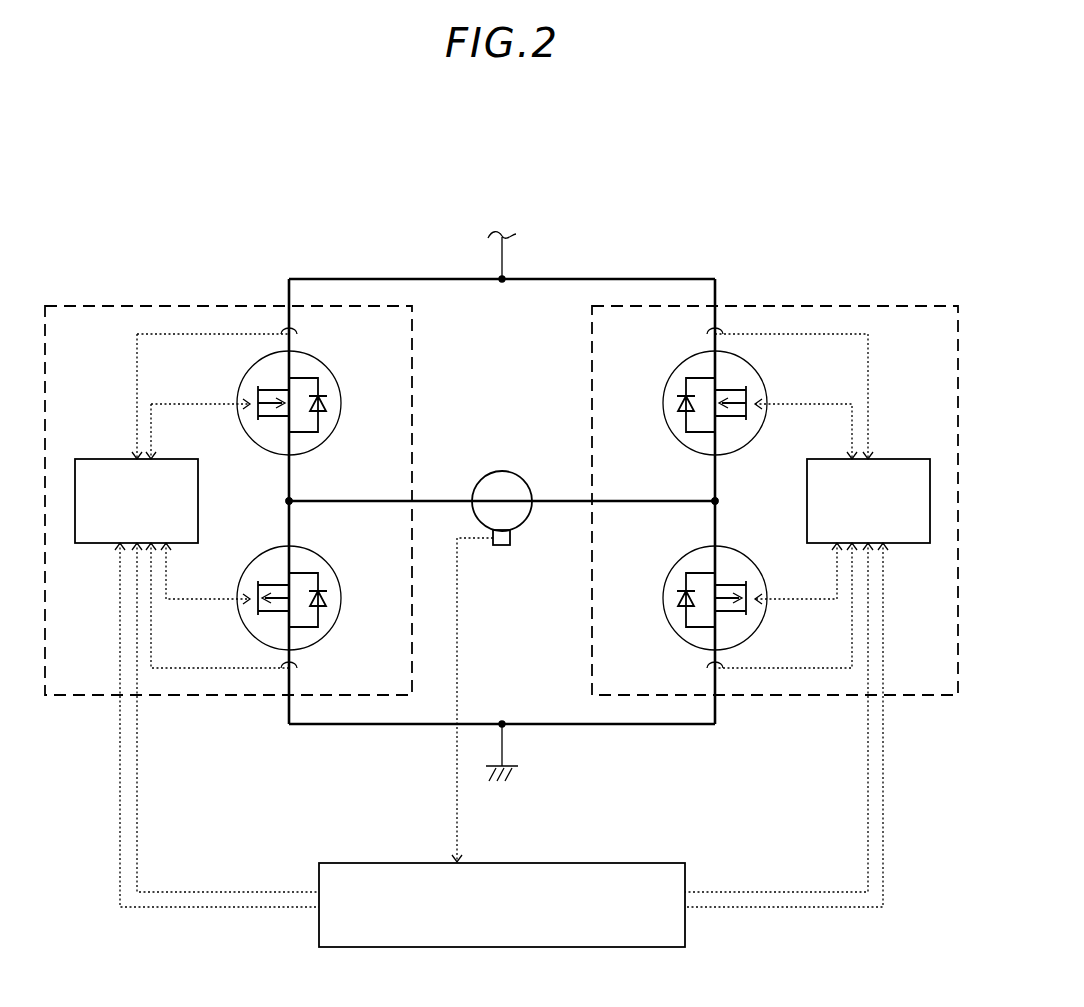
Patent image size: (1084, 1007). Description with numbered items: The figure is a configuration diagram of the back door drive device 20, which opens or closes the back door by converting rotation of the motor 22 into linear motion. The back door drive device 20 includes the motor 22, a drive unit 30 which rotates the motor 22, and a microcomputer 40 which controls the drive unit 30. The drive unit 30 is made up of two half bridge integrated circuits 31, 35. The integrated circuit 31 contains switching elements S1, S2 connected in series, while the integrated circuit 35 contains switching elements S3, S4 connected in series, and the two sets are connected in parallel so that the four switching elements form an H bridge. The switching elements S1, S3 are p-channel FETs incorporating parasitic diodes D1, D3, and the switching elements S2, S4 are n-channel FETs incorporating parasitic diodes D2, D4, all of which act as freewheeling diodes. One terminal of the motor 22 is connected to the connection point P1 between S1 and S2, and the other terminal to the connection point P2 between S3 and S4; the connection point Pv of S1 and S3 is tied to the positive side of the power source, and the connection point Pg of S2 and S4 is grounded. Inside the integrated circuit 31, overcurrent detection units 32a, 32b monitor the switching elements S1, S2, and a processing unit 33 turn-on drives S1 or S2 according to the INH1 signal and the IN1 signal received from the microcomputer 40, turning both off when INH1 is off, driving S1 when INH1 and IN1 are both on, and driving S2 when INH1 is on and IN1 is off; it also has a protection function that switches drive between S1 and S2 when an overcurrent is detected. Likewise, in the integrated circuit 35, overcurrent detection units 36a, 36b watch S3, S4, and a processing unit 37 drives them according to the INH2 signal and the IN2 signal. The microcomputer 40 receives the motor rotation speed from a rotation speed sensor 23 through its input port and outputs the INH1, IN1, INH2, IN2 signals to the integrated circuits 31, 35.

The back door drive device 20 is at (658, 266).
The motor 22 is at (502, 471).
The rotation speed sensor 23 is at (512, 538).
The drive unit 30 is at (852, 293).
The integrated circuit 31 is at (213, 306).
The overcurrent detection unit 32a is at (298, 336).
The overcurrent detection unit 32b is at (298, 670).
The processing unit 33 is at (107, 459).
The integrated circuit 35 is at (789, 306).
The overcurrent detection unit 36a is at (706, 336).
The overcurrent detection unit 36b is at (706, 670).
The processing unit 37 is at (895, 459).
The microcomputer 40 is at (586, 863).
The switching element S1 is at (266, 372).
The switching element S2 is at (266, 567).
The switching element S3 is at (738, 372).
The switching element S4 is at (738, 567).
The parasitic diode D1 is at (324, 402).
The parasitic diode D2 is at (324, 595).
The parasitic diode D3 is at (680, 402).
The parasitic diode D4 is at (680, 595).
The connection point P1 is at (296, 506).
The connection point P2 is at (708, 506).
The connection point Pv is at (502, 283).
The connection point Pg is at (502, 720).
The INH1 signal INH1 is at (273, 881).
The IN1 signal IN1 is at (278, 923).
The INH2 signal INH2 is at (716, 881).
The IN2 signal IN2 is at (721, 923).